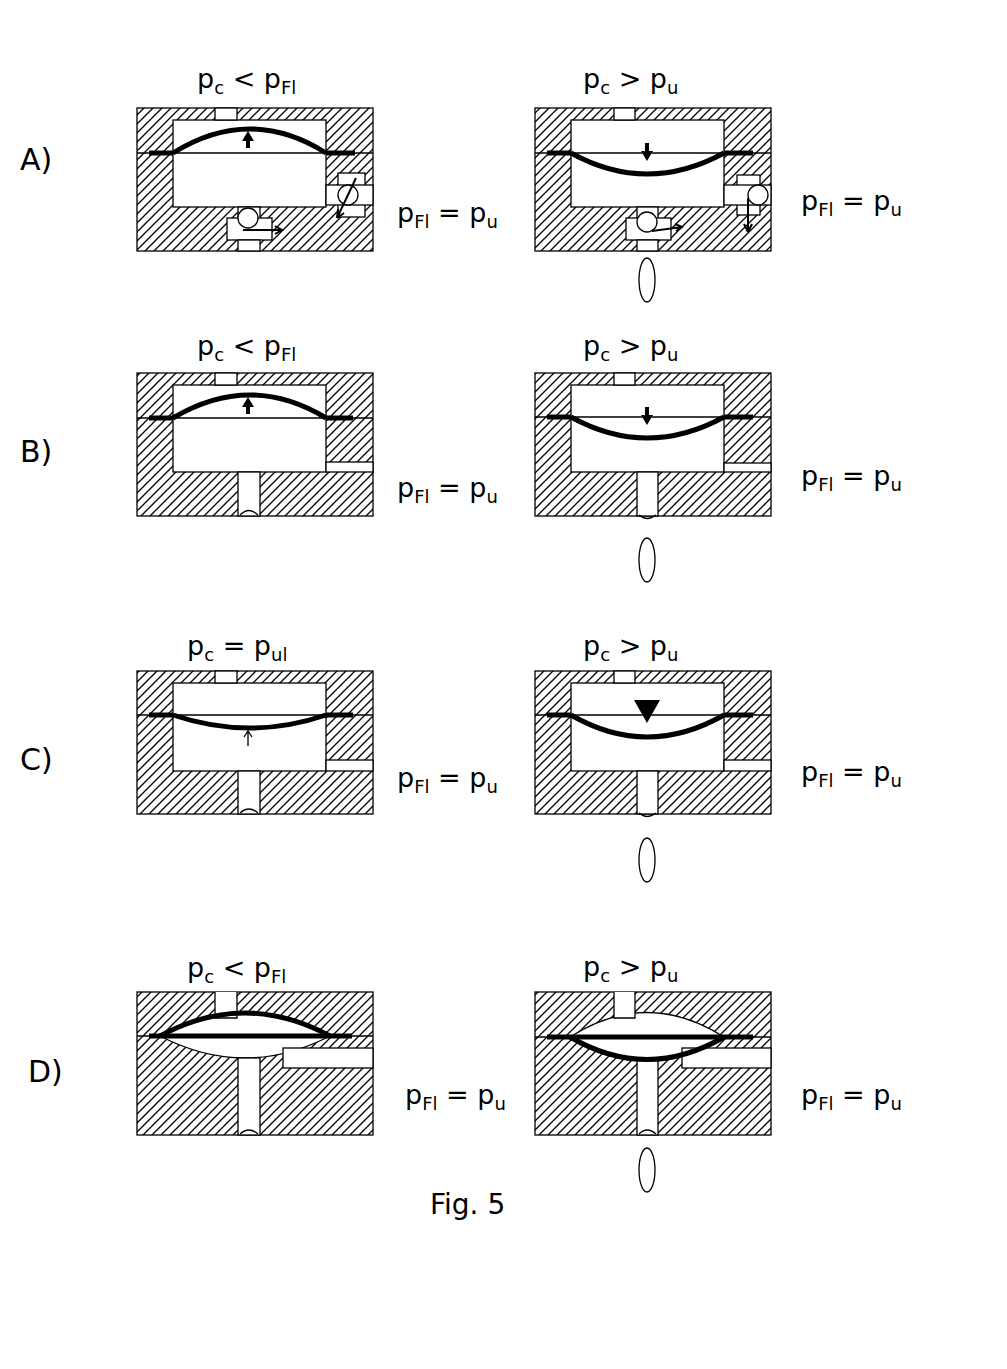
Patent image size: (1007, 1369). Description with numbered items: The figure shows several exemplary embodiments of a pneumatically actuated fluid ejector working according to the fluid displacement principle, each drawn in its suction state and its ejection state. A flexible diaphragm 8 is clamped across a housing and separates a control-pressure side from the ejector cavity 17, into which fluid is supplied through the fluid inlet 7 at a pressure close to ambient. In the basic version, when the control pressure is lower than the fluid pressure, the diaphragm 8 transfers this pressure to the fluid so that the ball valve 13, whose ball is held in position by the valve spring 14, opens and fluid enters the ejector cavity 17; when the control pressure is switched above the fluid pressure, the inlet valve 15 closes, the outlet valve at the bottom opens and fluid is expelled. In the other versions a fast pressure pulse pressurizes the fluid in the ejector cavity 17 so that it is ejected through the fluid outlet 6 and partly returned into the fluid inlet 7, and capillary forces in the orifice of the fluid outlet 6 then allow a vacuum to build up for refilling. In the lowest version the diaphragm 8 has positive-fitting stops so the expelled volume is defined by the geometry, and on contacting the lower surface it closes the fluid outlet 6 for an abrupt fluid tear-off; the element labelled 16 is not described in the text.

The fluid outlet 6 is at (248, 493).
The fluid inlet 7 is at (355, 467).
The diaphragm 8 is at (207, 142).
The ball valve 13 is at (357, 177).
The valve spring 14 is at (343, 197).
The inlet valve 15 is at (356, 217).
The check valve 16 is at (238, 230).
The ejector cavity 17 is at (217, 173).